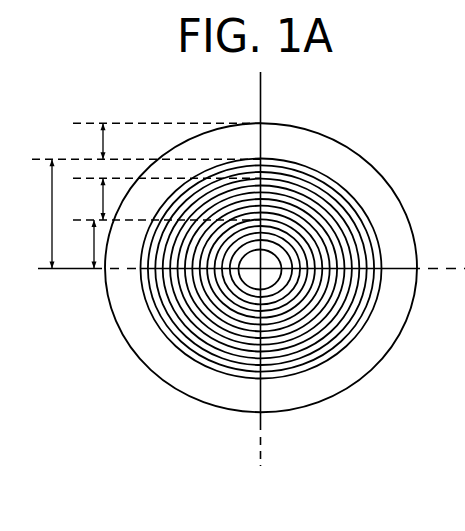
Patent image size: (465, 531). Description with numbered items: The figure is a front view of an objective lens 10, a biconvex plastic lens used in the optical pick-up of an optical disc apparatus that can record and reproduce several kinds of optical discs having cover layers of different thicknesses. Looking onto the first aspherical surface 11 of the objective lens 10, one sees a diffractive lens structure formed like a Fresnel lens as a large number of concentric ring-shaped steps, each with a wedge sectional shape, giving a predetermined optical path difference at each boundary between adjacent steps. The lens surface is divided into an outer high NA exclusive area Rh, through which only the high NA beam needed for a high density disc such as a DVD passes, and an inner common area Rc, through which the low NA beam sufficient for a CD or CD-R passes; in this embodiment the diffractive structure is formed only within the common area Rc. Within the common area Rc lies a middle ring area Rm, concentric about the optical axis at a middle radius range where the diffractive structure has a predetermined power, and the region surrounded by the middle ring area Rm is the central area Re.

The objective lens 10 is at (261, 307).
The first aspherical surface 11 is at (181, 373).
The high NA exclusive area Rh is at (146, 141).
The middle ring area Rm is at (165, 199).
The central area Re is at (79, 244).
The common area Rc is at (39, 213).